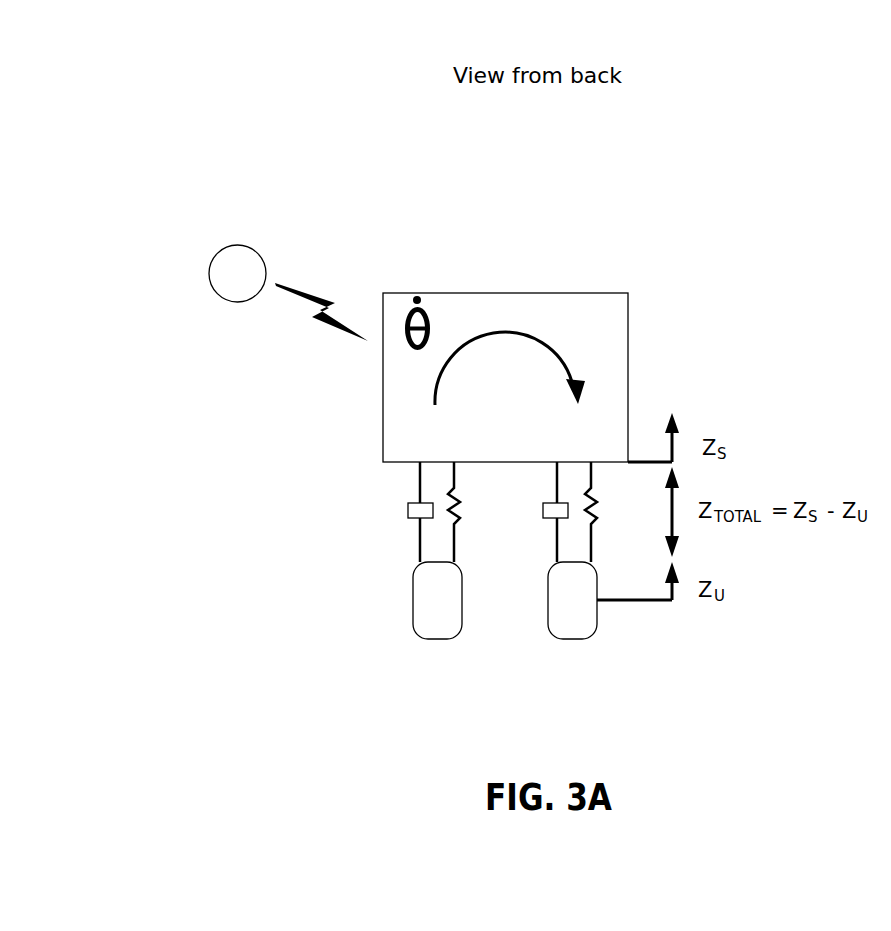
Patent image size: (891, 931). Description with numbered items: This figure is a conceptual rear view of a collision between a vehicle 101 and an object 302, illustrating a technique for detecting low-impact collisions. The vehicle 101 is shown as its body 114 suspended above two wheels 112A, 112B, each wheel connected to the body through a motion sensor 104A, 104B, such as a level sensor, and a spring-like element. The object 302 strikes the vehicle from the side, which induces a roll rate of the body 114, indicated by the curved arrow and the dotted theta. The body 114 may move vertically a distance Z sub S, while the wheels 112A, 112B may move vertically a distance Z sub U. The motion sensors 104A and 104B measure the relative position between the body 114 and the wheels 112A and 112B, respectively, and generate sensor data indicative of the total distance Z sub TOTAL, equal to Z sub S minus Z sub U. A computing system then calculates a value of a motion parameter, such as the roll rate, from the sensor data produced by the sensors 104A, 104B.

The vehicle 101 is at (735, 185).
The body 114 is at (580, 292).
The object 302 is at (238, 245).
The motion sensor 104A is at (409, 505).
The motion sensor 104B is at (550, 504).
The wheel 112A is at (435, 640).
The wheel 112B is at (572, 641).